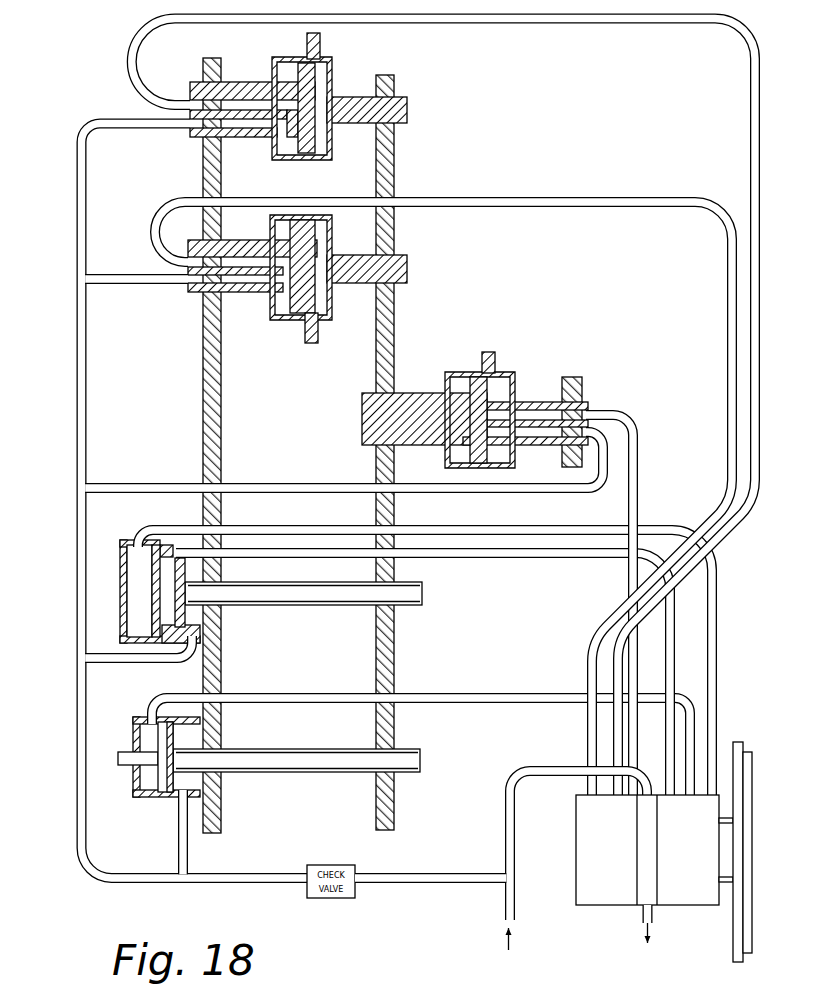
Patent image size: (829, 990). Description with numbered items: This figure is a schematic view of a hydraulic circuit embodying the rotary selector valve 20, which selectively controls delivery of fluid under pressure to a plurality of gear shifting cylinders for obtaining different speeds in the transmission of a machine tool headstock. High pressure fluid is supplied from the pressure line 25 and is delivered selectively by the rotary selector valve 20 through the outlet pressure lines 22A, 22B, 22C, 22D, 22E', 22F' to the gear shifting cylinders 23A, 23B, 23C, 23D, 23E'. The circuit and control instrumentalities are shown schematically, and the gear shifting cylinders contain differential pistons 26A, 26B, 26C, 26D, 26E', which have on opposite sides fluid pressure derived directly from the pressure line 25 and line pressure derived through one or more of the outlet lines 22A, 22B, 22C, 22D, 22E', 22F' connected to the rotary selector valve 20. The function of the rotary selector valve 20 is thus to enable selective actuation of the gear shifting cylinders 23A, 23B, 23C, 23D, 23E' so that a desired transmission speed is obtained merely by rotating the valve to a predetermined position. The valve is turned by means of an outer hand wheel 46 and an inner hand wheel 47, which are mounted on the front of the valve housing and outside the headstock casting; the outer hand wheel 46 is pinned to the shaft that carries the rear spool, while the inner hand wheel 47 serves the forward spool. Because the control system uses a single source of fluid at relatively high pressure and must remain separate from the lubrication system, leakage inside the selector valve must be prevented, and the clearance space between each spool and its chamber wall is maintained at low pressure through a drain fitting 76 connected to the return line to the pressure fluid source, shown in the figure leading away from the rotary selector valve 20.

The rotary selector valve 20 is at (575, 853).
The outlet pressure line 22A is at (716, 670).
The outlet pressure line 22B is at (694, 722).
The outlet pressure line 22C is at (673, 658).
The outlet pressure line 22D is at (633, 747).
The outlet pressure line 22E' is at (443, 406).
The outlet pressure line 22F' is at (443, 498).
The gear shifting cylinder 23A is at (131, 737).
The gear shifting cylinder 23B is at (118, 582).
The gear shifting cylinder 23C is at (336, 308).
The gear shifting cylinder 23D is at (338, 69).
The gear shifting cylinder 23E' is at (475, 399).
The pressure line 25 is at (505, 829).
The differential piston 26A is at (157, 794).
The differential piston 26B is at (186, 613).
The differential piston 26C is at (290, 311).
The differential piston 26D is at (305, 154).
The differential piston 26E' is at (475, 404).
The outer hand wheel 46 is at (763, 738).
The inner hand wheel 47 is at (733, 943).
The drain fitting 76 is at (654, 910).